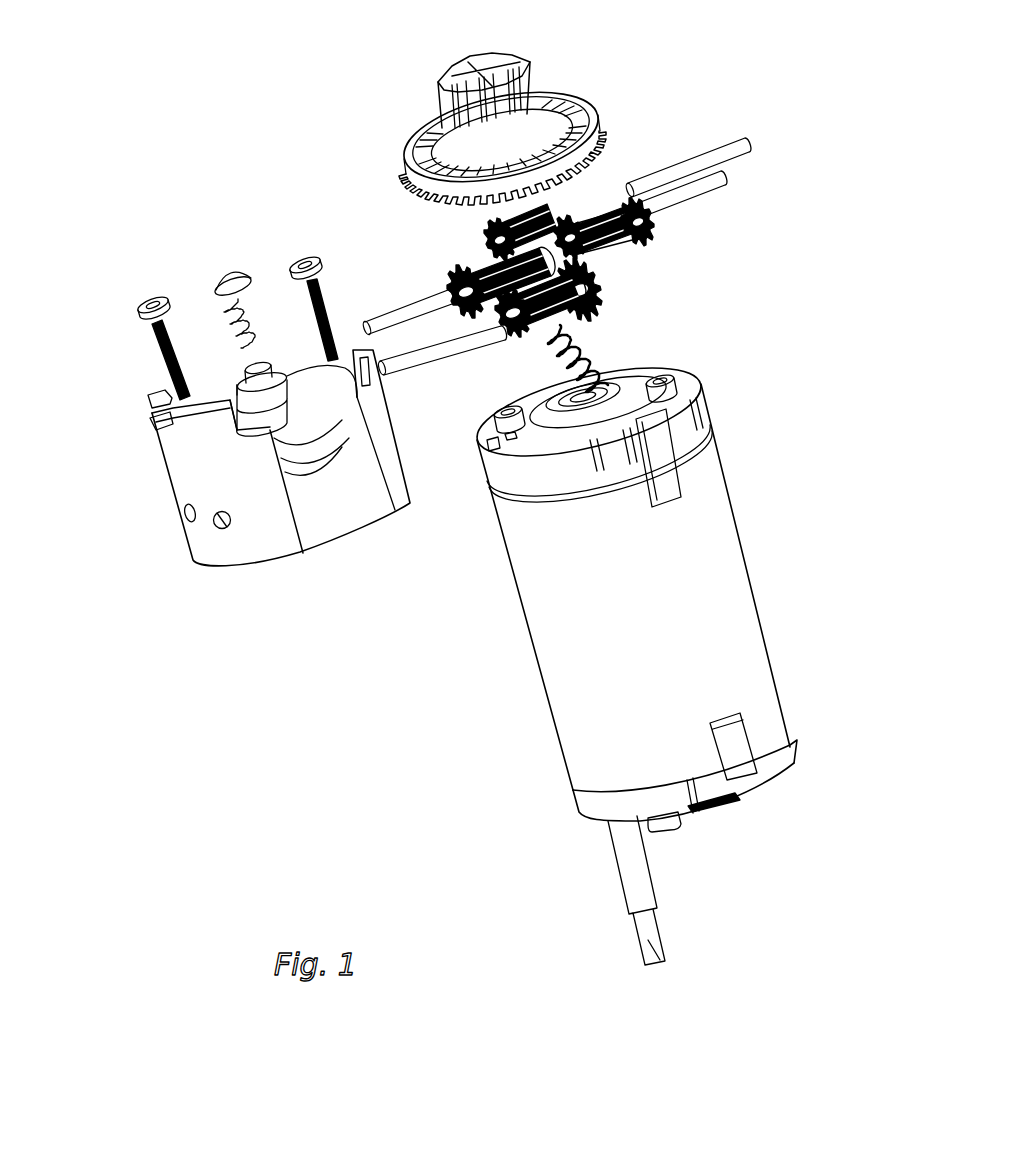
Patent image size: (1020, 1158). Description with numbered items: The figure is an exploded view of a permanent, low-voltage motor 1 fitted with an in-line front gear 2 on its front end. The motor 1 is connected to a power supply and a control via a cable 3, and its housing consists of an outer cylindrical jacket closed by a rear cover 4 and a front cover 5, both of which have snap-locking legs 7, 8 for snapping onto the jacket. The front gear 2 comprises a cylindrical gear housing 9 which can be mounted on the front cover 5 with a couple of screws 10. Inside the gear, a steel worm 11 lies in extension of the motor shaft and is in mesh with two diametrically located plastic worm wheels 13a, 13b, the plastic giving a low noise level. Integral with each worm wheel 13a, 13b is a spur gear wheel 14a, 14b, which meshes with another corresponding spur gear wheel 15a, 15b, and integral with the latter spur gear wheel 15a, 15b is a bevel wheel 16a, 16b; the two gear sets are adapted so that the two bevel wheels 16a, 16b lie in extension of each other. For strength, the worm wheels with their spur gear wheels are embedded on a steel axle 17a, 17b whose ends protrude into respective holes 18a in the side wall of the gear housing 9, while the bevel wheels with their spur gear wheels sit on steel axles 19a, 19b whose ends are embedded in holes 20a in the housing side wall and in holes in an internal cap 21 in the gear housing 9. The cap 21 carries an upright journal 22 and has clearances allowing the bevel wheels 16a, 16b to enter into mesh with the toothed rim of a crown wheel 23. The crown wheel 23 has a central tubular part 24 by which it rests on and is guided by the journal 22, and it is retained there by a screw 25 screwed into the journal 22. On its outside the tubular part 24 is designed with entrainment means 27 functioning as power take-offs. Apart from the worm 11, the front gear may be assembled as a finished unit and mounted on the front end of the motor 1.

The motor 1 is at (527, 670).
The front gear 2 is at (558, 66).
The cable 3 is at (617, 877).
The rear cover 4 is at (788, 753).
The front cover 5 is at (710, 402).
The snap-locking leg 7 is at (737, 742).
The snap-locking leg 8 is at (663, 490).
The gear housing 9 is at (320, 537).
The screws 10 is at (290, 265).
The worm 11 is at (590, 363).
The worm wheel 13a is at (600, 295).
The worm wheel 13b is at (487, 229).
The spur gear wheel 14a is at (537, 345).
The spur gear wheel 14b is at (563, 200).
The spur gear wheel 15a is at (485, 247).
The spur gear wheel 15b is at (612, 261).
The bevel wheel 16a is at (450, 267).
The bevel wheel 16b is at (647, 233).
The steel axle 17a is at (420, 370).
The steel axle 17b is at (730, 142).
The hole 18a is at (225, 530).
The steel axle 19a is at (393, 322).
The steel axle 19b is at (708, 190).
The hole 20a is at (193, 523).
The internal cap 21 is at (315, 450).
The journal 22 is at (243, 372).
The crown wheel 23 is at (587, 107).
The tubular part 24 is at (475, 63).
The screw 25 is at (217, 282).
The entrainment means 27 is at (443, 110).